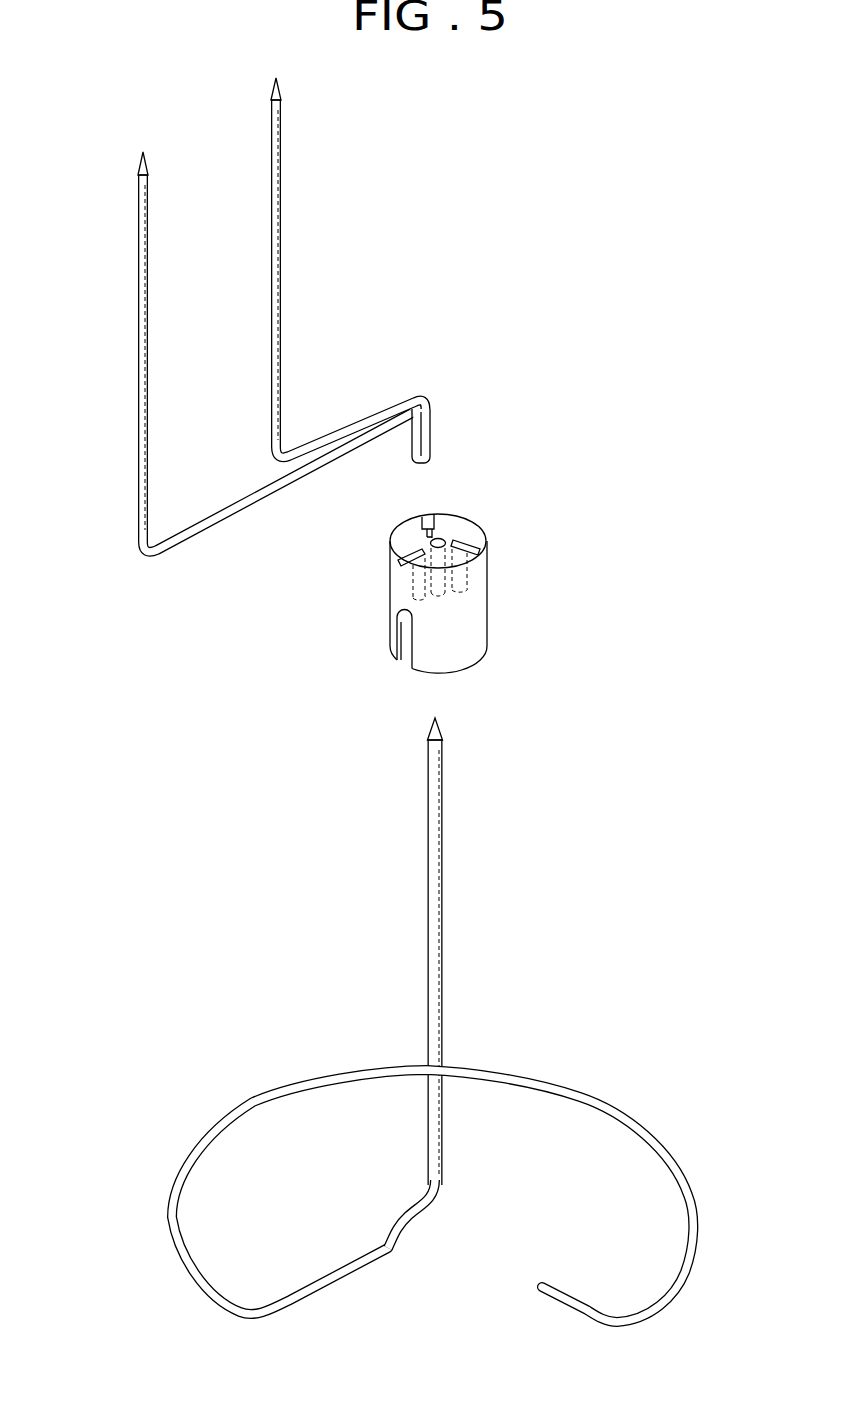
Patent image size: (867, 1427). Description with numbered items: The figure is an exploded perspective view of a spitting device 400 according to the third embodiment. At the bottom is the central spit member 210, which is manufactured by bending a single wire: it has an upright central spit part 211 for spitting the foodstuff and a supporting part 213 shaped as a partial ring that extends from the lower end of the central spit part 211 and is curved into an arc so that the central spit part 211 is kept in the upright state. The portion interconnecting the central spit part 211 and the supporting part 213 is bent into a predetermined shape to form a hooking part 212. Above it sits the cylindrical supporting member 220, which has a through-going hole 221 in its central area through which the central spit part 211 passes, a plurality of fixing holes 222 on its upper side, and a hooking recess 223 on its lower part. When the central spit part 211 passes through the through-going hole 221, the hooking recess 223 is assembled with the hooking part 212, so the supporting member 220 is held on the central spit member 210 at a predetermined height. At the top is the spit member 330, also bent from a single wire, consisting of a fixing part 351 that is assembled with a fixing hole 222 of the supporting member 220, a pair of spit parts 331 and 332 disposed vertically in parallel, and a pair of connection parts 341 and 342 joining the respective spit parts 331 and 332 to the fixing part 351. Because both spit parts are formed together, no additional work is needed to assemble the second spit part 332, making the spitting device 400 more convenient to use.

The spitting device 400 is at (650, 260).
The spit member 330 is at (332, 123).
The spit part 331 is at (138, 318).
The second spit part 332 is at (270, 180).
The connection part 341 is at (232, 520).
The connection part 342 is at (336, 437).
The fixing part 351 is at (432, 462).
The supporting member 220 is at (558, 580).
The through-going hole 221 is at (442, 536).
The fixing holes 222 is at (397, 562).
The hooking recess 223 is at (398, 635).
The central spit member 210 is at (618, 1002).
The central spit part 211 is at (446, 812).
The hooking part 212 is at (413, 1213).
The supporting part 213 is at (673, 1160).